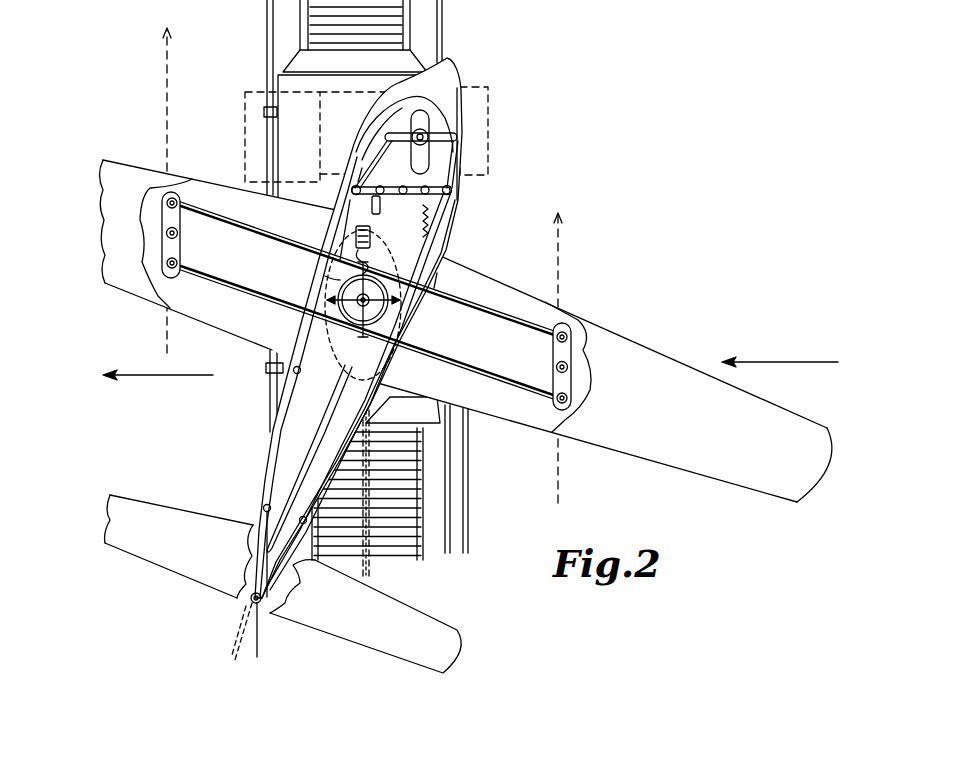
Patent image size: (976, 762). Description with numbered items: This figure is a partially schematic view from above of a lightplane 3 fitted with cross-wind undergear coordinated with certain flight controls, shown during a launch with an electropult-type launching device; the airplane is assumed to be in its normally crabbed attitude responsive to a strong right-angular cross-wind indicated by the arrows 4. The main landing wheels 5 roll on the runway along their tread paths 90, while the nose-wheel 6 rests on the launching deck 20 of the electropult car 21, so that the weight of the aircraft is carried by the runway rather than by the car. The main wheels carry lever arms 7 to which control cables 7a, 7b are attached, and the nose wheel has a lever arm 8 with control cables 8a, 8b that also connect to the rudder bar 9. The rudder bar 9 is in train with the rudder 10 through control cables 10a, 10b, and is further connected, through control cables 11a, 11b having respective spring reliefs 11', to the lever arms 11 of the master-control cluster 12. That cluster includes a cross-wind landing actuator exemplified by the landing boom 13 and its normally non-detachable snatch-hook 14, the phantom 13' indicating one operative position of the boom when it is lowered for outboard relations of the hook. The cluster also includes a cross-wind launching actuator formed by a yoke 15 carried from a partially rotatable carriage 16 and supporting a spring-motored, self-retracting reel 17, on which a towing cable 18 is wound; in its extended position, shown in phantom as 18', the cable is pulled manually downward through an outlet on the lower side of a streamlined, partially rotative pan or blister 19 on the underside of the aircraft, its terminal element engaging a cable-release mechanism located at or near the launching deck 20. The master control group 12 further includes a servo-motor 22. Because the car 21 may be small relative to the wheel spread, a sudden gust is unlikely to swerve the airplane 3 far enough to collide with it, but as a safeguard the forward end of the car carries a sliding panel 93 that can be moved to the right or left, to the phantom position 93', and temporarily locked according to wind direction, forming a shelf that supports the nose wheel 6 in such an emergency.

The modified type of airplane 3 is at (470, 78).
The arrows 4 is at (166, 375).
The main landing wheels 5 is at (147, 219).
The nose-wheel 6 is at (458, 118).
The lever arms 7 is at (181, 246).
The control cable 7a is at (233, 284).
The control cable 7b is at (250, 232).
The lever arm 8 is at (395, 114).
The control cable 8a is at (372, 150).
The control cable 8b is at (462, 190).
The rudder bar 9 is at (393, 186).
The rudder 10 is at (263, 627).
The control cable 10a is at (280, 443).
The control cable 10b is at (343, 443).
The lever arms 11 is at (358, 391).
The control cable 11a is at (376, 198).
The control cable 11b is at (432, 280).
The spring reliefs 11' is at (466, 225).
The master-control cluster 12 is at (327, 290).
The landing boom 13 is at (309, 458).
The phantom boom position 13' is at (376, 488).
The snatch-hook 14 is at (293, 588).
The yoke 15 is at (385, 239).
The carriage 16 is at (300, 372).
The reel 17 is at (350, 250).
The towing cable 18 is at (322, 222).
The phantom extended cable 18' is at (322, 167).
The pan or blister 19 is at (393, 372).
The launching deck 20 is at (290, 137).
The electropult car 21 is at (264, 73).
The servo-motor 22 is at (323, 277).
The tread paths 90 is at (167, 108).
The sliding panel 93 is at (426, 131).
The phantom panel position 93' is at (255, 137).